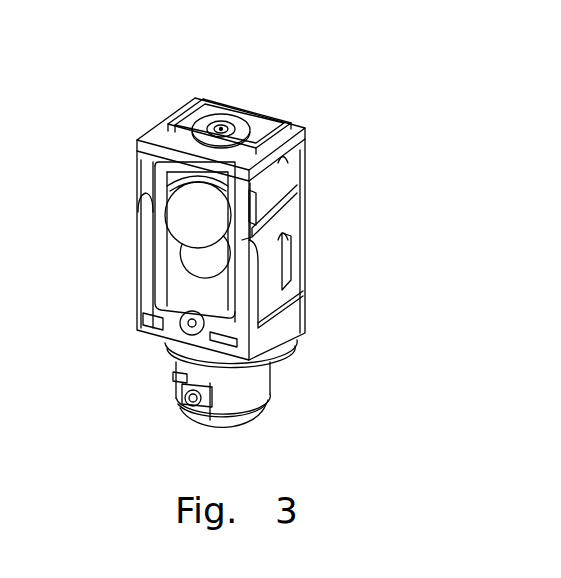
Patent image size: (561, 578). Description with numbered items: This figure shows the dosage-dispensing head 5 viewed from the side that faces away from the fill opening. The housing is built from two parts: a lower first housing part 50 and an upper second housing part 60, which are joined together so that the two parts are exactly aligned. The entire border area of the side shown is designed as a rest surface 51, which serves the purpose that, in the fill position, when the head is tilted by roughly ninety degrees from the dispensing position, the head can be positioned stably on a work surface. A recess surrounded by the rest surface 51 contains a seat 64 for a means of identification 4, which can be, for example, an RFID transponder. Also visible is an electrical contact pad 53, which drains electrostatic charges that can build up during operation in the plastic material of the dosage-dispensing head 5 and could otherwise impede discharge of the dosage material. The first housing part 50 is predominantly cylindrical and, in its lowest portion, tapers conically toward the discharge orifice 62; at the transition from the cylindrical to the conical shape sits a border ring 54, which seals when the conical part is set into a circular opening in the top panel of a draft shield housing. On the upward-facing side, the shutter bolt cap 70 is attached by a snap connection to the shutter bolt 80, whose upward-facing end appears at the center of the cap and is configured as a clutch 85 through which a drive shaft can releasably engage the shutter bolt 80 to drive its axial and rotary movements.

The dosage-dispensing head 5 is at (101, 113).
The means of identification 4 is at (180, 200).
The first housing part 50 is at (247, 390).
The rest surface 51 is at (147, 251).
The electrical contact pad 53 is at (190, 410).
The border ring 54 is at (261, 408).
The second housing part 60 is at (293, 212).
The discharge orifice 62 is at (228, 437).
The seat 64 is at (226, 212).
The shutter bolt cap 70 is at (245, 117).
The shutter bolt 80 is at (200, 112).
The clutch 85 is at (220, 126).